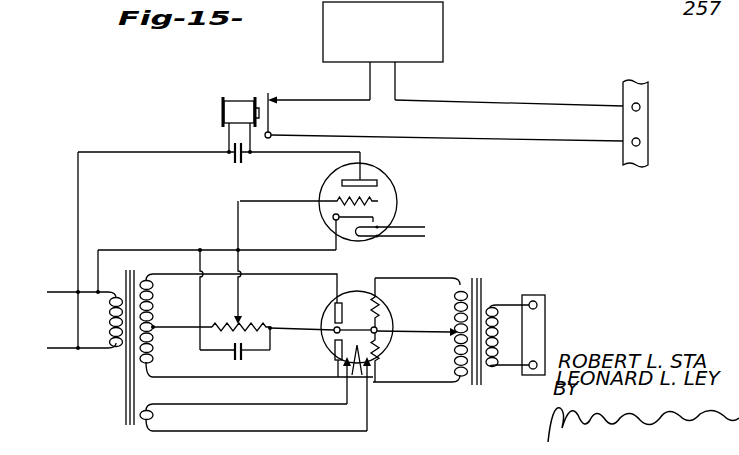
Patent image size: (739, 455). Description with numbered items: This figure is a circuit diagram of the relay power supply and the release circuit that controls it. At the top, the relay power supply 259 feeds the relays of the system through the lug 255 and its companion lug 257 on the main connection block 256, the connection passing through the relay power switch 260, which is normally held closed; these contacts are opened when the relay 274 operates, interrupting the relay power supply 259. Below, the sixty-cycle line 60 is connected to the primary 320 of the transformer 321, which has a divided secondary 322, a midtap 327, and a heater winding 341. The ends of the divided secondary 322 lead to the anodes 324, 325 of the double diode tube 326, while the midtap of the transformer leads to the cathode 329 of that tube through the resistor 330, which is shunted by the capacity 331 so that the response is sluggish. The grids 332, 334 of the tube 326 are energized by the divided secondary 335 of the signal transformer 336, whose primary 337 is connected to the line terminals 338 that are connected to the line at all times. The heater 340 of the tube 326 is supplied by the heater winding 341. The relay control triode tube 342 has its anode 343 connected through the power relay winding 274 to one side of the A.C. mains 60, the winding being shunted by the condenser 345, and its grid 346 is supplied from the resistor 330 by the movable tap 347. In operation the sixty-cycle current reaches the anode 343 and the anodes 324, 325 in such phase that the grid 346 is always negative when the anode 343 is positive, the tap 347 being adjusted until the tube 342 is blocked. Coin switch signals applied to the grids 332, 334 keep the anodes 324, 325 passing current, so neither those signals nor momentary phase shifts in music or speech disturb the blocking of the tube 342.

The relay power supply 259 is at (443, 44).
The power relay winding 274 is at (240, 82).
The relay power switch 260 is at (271, 117).
The main connection block 256 is at (619, 100).
The lug 255 is at (640, 107).
The companion lug 257 is at (640, 142).
The condenser 345 is at (230, 159).
The relay control triode tube 342 is at (393, 186).
The anode 343 is at (333, 181).
The grid 346 is at (378, 202).
The primary 320 is at (112, 340).
The 60-cycle line 60 is at (56, 298).
The transformer 321 is at (136, 390).
The divided secondary 322 is at (154, 304).
The winding tap 327 is at (170, 333).
The heater winding 341 is at (154, 416).
The resistor 330 is at (215, 322).
The movable tap 347 is at (245, 323).
The capacity 331 is at (246, 362).
The double diode tube 326 is at (355, 291).
The anode 324 is at (335, 306).
The anode 325 is at (334, 350).
The cathode 329 is at (334, 330).
The divided secondary 335 is at (457, 310).
The grid 332 is at (381, 300).
The grid 334 is at (381, 352).
The heater 340 is at (352, 372).
The signal transformer 336 is at (483, 295).
The primary 337 is at (500, 353).
The line terminals 338 is at (538, 306).